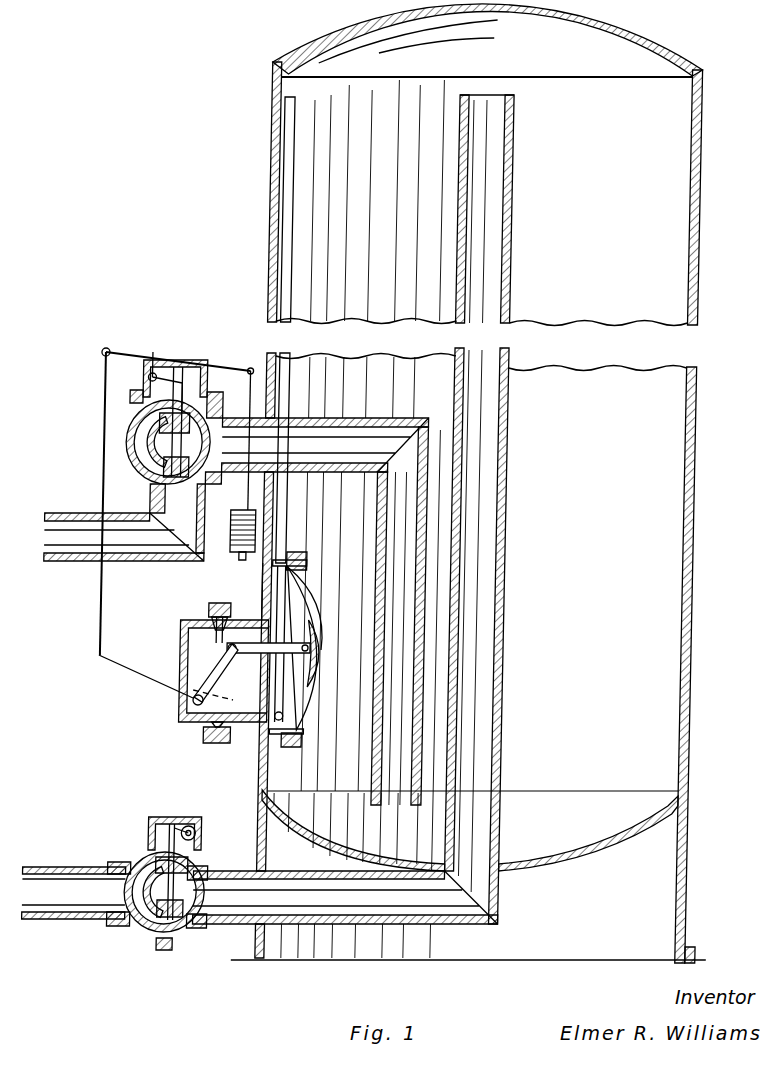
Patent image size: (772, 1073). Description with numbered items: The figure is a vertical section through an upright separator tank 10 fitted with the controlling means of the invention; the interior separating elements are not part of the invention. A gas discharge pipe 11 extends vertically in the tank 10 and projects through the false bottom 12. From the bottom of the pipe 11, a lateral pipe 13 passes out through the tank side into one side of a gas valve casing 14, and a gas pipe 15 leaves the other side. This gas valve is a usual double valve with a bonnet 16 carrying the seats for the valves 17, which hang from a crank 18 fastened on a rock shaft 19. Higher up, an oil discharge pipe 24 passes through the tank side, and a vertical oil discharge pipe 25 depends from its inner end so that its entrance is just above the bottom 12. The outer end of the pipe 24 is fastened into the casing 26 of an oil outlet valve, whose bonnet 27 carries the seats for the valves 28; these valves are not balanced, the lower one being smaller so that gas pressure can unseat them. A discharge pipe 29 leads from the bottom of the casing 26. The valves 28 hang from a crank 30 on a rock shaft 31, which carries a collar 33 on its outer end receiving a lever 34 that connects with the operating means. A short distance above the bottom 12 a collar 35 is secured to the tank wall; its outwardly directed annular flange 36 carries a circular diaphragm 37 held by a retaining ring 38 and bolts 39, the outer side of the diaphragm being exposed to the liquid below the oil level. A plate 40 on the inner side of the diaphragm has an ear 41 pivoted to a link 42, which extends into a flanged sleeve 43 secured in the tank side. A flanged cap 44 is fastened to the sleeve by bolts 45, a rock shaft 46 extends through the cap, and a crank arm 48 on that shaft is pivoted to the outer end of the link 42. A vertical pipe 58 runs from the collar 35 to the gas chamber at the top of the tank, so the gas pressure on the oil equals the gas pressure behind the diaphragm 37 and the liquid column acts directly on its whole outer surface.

The separator tank 10 is at (705, 408).
The gas discharge pipe 11 is at (517, 210).
The false bottom 12 is at (607, 852).
The lateral pipe 13 is at (410, 905).
The gas valve casing 14 is at (170, 935).
The gas pipe 15 is at (108, 918).
The bonnet 16 is at (190, 932).
The valves 17 is at (205, 864).
The crank 18 is at (202, 823).
The rock shaft 19 is at (214, 832).
The oil discharge pipe 24 is at (362, 420).
The vertical oil discharge pipe 25 is at (392, 752).
The oil outlet valve casing 26 is at (135, 441).
The bonnet 27 is at (158, 460).
The valves 28 is at (189, 427).
The discharge pipe 29 is at (181, 558).
The crank 30 is at (183, 372).
The rock shaft 31 is at (160, 360).
The collar 33 is at (173, 368).
The lever 34 is at (120, 347).
The collar 35 is at (280, 748).
The annular flange 36 is at (301, 555).
The circular diaphragm 37 is at (326, 596).
The retaining ring 38 is at (316, 740).
The bolts 39 is at (318, 562).
The plate 40 is at (336, 665).
The ear 41 is at (336, 645).
The link 42 is at (261, 654).
The flanged sleeve 43 is at (265, 605).
The flanged cap 44 is at (193, 640).
The bolts 45 is at (218, 610).
The rock shaft 46 is at (195, 720).
The crank arm 48 is at (203, 695).
The vertical pipe 58 is at (300, 218).